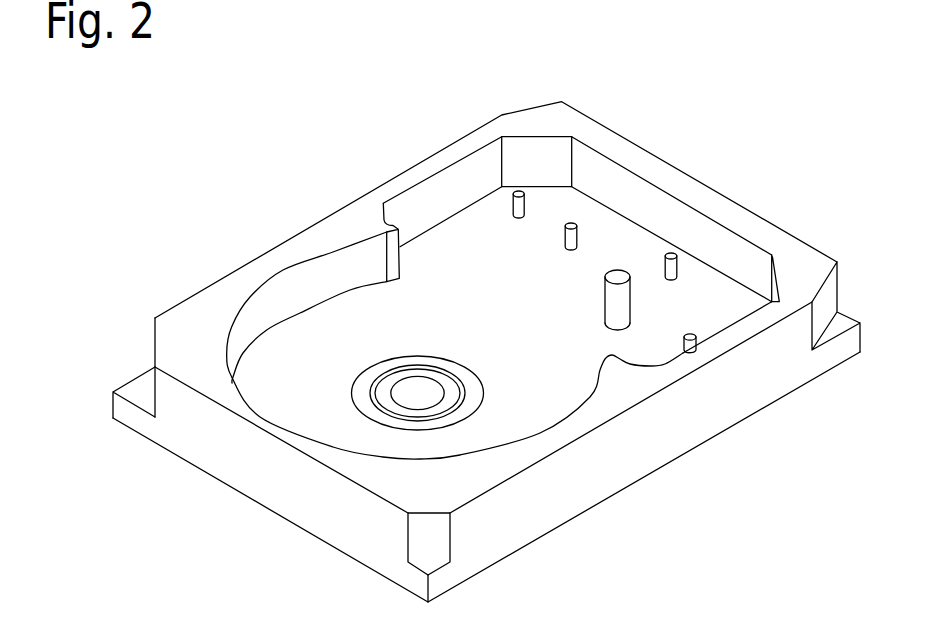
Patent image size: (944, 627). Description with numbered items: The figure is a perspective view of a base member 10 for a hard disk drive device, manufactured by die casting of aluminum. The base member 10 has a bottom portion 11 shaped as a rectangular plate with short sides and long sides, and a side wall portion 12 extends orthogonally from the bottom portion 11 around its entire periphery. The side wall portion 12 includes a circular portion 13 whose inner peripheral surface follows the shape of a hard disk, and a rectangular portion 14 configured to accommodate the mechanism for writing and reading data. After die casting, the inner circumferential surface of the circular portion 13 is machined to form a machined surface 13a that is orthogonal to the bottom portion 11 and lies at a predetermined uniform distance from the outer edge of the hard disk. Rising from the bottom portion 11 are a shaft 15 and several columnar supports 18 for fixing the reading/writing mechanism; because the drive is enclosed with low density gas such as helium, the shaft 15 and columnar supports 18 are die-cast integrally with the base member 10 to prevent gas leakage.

The base member 10 is at (213, 205).
The bottom portion 11 is at (597, 230).
The side wall portion 12 is at (362, 227).
The circular portion 13 is at (275, 293).
The machined surface 13a is at (243, 320).
The rectangular portion 14 is at (443, 198).
The shaft 15 is at (605, 302).
The columnar support 18 is at (562, 232).